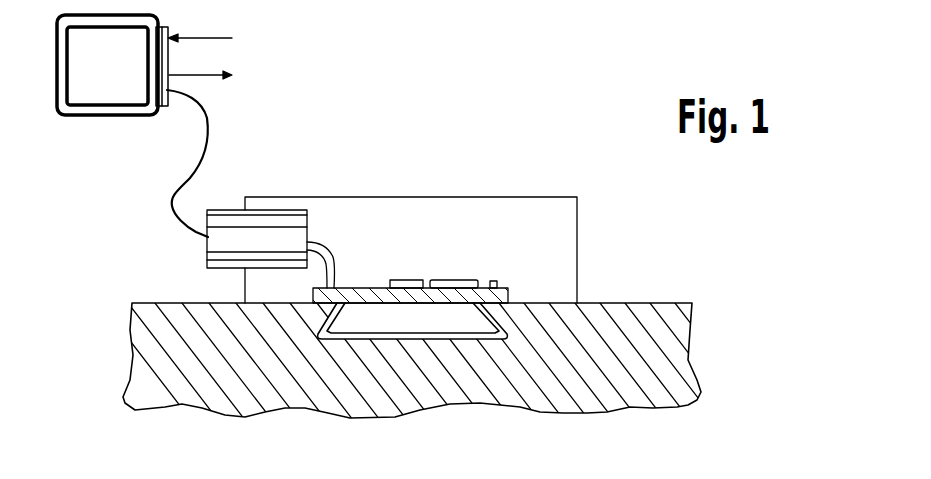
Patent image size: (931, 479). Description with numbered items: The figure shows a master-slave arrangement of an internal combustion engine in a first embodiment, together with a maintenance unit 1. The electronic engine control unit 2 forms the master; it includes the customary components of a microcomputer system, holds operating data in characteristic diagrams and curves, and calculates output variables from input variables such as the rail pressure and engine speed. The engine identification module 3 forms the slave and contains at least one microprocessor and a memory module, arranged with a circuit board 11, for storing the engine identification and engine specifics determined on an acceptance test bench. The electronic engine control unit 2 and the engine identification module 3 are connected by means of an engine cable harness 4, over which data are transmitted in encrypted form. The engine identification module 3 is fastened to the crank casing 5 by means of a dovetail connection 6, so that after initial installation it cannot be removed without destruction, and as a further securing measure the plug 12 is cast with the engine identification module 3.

The maintenance unit 1 is at (385, 118).
The electronic engine control unit 2 is at (100, 87).
The engine identification module 3 is at (468, 197).
The engine cable harness 4 is at (171, 196).
The crank casing 5 is at (683, 303).
The dovetail connection 6 is at (504, 319).
The circuit board 11 is at (511, 290).
The plug 12 is at (231, 209).